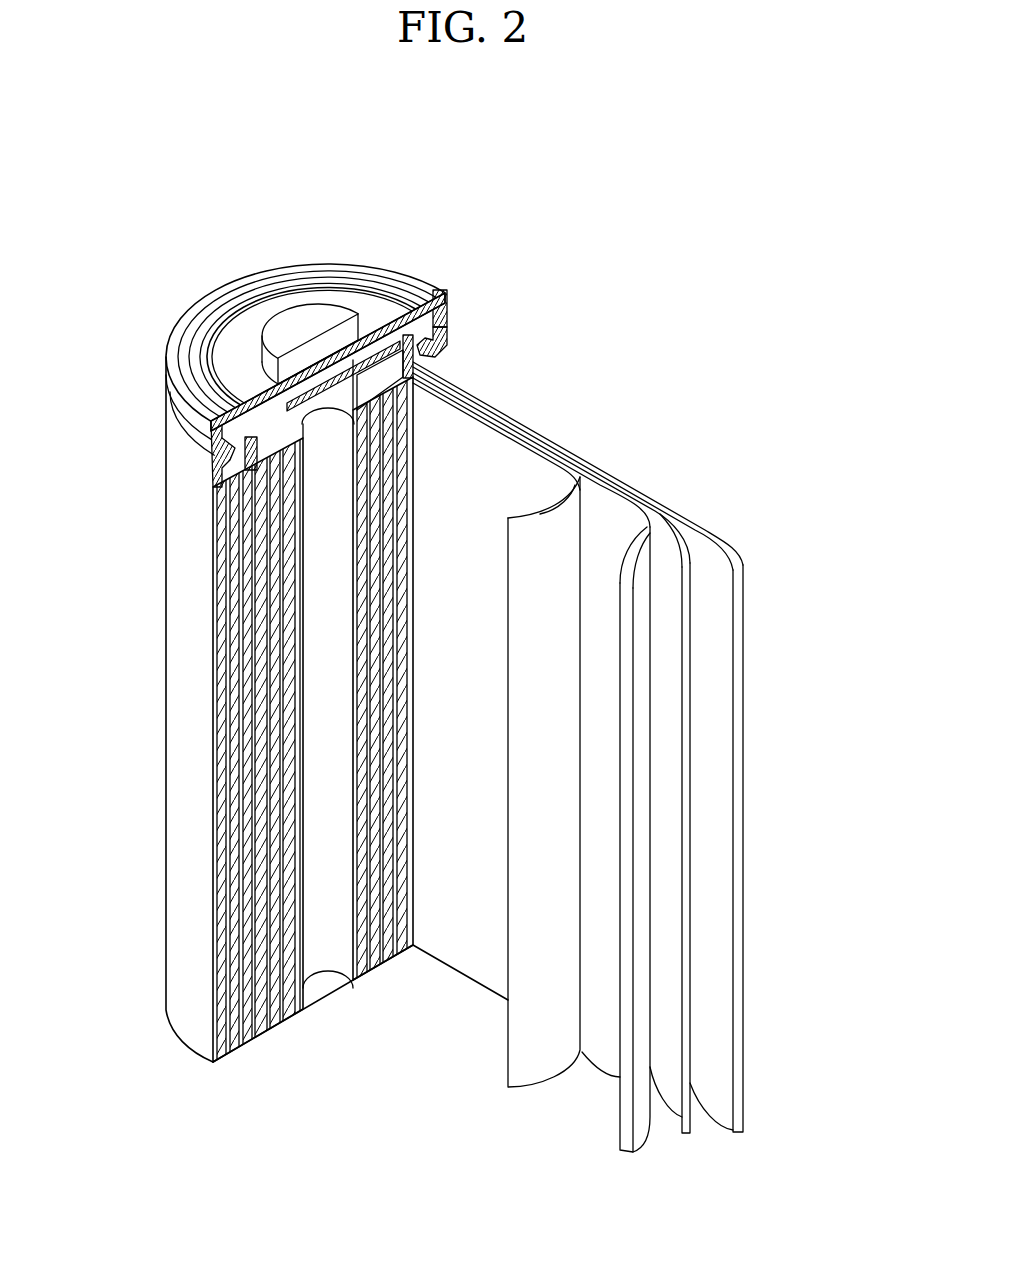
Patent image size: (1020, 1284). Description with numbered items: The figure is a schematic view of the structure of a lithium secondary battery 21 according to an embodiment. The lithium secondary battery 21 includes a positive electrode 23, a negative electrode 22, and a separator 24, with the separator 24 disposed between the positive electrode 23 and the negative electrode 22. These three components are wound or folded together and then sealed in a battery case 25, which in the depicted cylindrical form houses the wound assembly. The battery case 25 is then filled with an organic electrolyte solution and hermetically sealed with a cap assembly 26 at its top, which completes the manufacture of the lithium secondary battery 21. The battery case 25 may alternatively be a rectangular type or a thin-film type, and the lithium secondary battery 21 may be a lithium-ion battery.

The lithium secondary battery 21 is at (640, 286).
The negative electrode 22 is at (725, 547).
The positive electrode 23 is at (607, 497).
The separator 24 is at (543, 525).
The battery case 25 is at (180, 712).
The cap assembly 26 is at (300, 307).